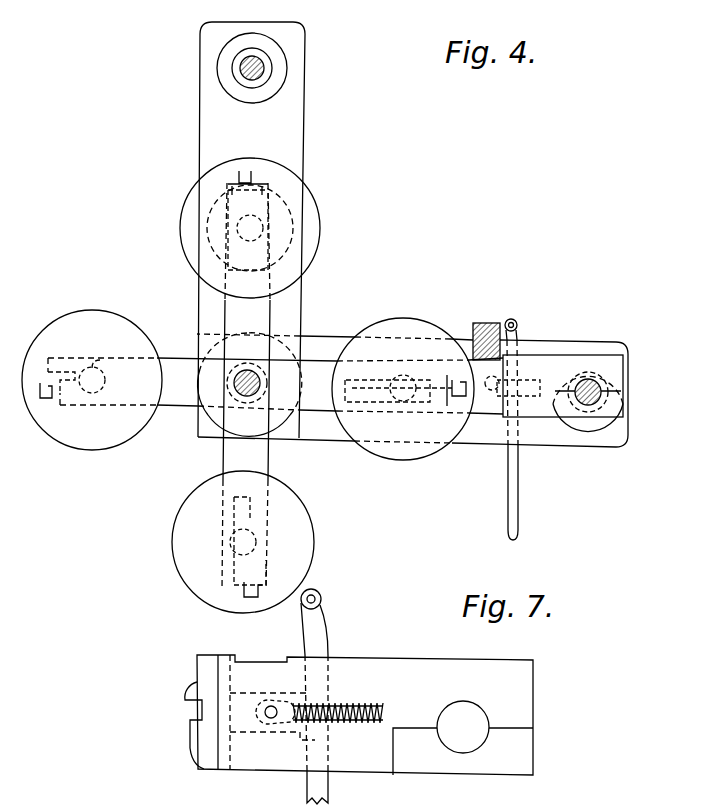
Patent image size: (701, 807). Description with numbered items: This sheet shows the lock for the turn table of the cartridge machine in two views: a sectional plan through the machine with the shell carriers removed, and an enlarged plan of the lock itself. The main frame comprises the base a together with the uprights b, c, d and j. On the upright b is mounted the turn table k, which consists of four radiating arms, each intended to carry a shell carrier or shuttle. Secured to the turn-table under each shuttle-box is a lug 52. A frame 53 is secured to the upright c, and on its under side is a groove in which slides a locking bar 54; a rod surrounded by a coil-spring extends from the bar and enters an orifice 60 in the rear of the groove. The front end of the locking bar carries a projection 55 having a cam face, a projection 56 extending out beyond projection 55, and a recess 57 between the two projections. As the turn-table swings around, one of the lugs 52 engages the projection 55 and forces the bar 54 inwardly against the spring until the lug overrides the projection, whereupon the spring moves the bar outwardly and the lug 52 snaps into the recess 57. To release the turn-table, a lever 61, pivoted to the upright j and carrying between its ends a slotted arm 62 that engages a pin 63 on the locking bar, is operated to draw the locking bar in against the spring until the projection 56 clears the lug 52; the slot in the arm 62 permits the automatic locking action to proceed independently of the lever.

In FIG. 4, the base a is at (290, 100).
In FIG. 4, the upright d is at (243, 70).
In FIG. 4, the upright b is at (240, 388).
In FIG. 4, the upright c is at (602, 398).
In FIG. 4, the turn table k is at (272, 386).
In FIG. 4, the upright j is at (474, 330).
In FIG. 4, the lug 52 is at (250, 180).
In FIG. 4, the frame 53 is at (549, 364).
In FIG. 7, the frame 53 is at (365, 715).
In FIG. 7, the locking bar 54 is at (244, 728).
In FIG. 7, the projection 55 is at (190, 740).
In FIG. 7, the projection 56 is at (186, 690).
In FIG. 7, the recess 57 is at (200, 706).
In FIG. 7, the orifice 60 is at (340, 705).
In FIG. 4, the lever 61 is at (514, 500).
In FIG. 7, the lever 61 is at (318, 792).
In FIG. 7, the slotted arm 62 is at (283, 708).
In FIG. 7, the pin 63 is at (268, 705).